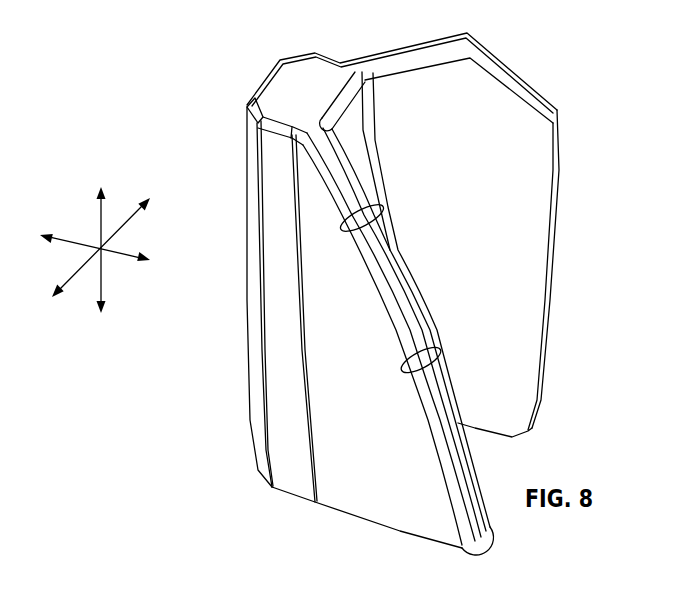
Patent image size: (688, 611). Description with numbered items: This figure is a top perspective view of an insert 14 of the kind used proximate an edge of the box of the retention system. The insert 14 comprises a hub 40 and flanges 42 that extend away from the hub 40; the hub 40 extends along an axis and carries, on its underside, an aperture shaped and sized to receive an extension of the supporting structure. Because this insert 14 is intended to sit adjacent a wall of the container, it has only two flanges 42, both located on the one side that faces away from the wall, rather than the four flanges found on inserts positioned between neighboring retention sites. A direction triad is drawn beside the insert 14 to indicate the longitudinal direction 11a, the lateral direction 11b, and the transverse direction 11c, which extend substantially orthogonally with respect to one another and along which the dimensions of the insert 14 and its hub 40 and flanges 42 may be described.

The insert 14 is at (228, 66).
The hub 40 is at (317, 93).
The flange 42 is at (366, 421).
The longitudinal direction 11a is at (130, 222).
The lateral direction 11b is at (118, 257).
The transverse direction 11c is at (98, 222).